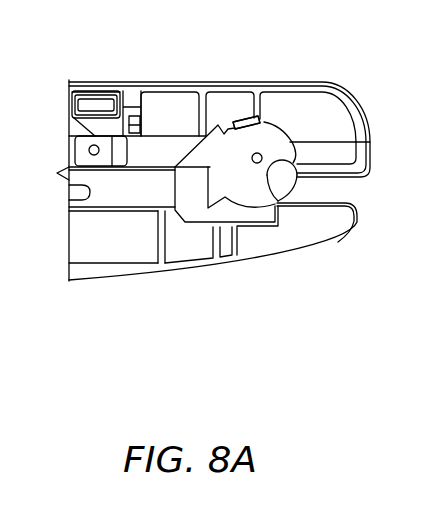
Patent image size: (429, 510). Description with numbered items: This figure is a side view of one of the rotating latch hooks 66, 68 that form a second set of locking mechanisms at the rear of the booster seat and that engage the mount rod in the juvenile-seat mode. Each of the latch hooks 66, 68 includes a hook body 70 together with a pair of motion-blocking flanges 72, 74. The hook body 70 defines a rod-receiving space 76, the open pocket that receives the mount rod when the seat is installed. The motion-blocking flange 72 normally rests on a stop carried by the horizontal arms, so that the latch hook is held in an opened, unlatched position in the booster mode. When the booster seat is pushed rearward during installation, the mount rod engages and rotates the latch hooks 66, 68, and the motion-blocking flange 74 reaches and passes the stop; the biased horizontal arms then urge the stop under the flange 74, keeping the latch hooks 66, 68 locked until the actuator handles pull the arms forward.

The latch hook 66 is at (273, 108).
The latch hook 68 is at (273, 108).
The hook body 70 is at (265, 143).
The motion-blocking flange 72 is at (190, 163).
The motion-blocking flange 74 is at (218, 180).
The rod-receiving space 76 is at (291, 194).